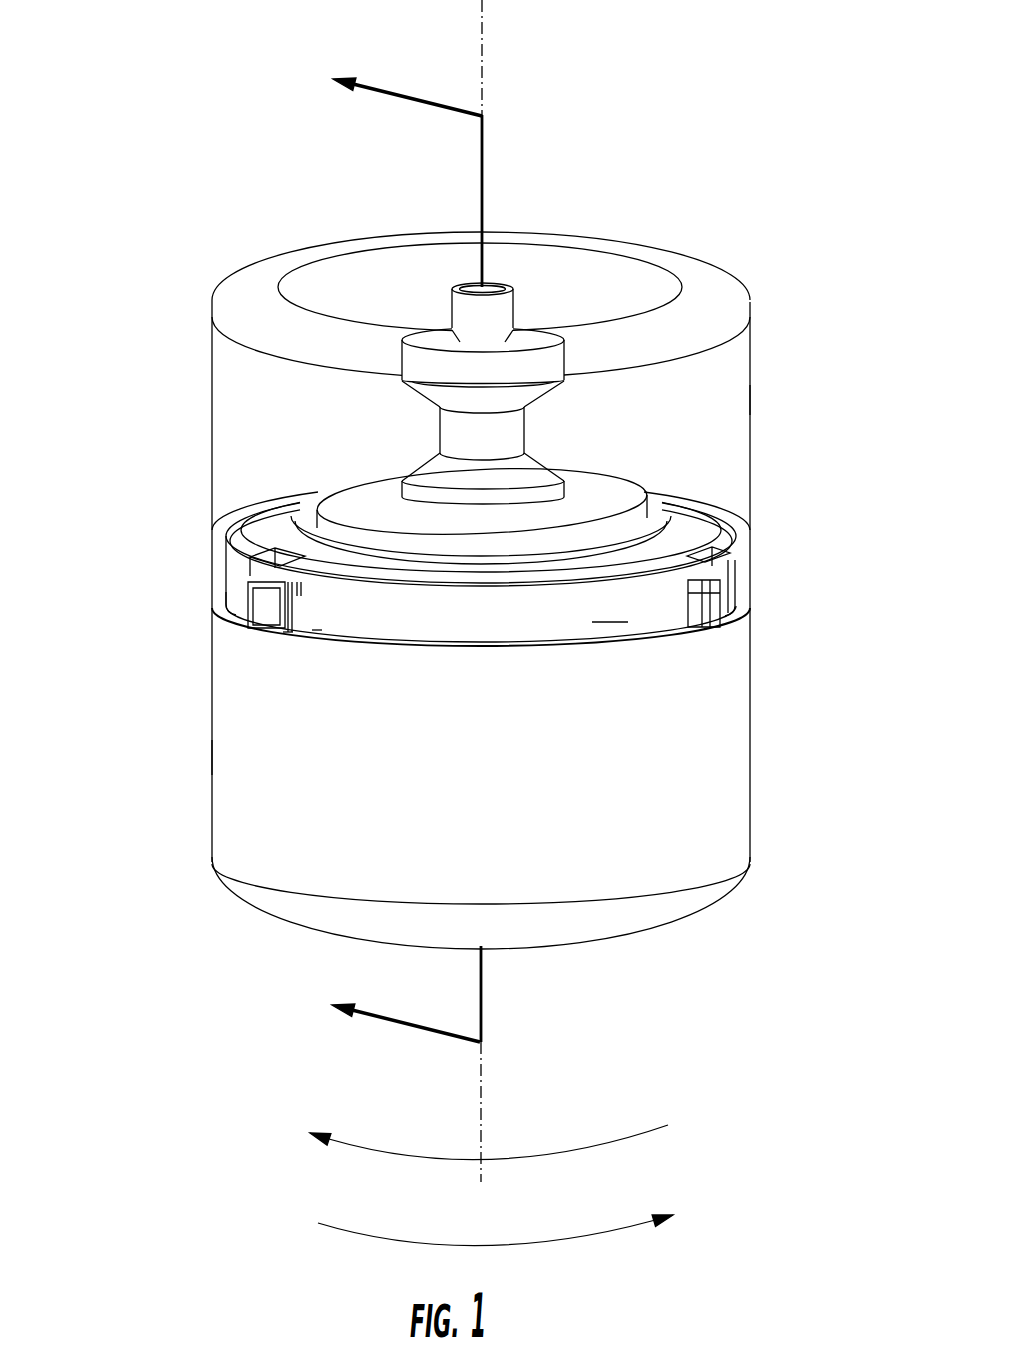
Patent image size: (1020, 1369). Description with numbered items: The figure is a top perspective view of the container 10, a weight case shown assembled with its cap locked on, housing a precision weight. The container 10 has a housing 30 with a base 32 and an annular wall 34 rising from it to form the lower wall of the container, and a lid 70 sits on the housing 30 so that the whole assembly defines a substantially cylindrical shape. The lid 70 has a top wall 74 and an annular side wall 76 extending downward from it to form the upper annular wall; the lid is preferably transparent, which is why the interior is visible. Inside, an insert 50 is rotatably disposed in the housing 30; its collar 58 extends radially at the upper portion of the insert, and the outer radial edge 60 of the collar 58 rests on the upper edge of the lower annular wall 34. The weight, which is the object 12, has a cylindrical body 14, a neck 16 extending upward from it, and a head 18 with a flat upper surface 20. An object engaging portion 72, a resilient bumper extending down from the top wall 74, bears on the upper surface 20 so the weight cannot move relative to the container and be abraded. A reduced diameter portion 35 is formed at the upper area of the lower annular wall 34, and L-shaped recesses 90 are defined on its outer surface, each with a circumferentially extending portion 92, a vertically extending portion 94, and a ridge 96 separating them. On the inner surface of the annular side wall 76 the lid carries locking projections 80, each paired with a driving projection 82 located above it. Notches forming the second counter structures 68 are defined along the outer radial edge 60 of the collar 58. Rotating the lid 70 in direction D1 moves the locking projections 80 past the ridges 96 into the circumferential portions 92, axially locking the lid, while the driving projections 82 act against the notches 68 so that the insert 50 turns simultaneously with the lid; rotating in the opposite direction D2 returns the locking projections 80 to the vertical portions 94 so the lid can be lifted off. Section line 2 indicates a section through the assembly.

The section line / viewing direction 2 is at (407, 538).
The container 10 is at (755, 355).
The object 12 is at (438, 435).
The cylindrical body 14 is at (333, 497).
The neck 16 is at (527, 433).
The head 18 is at (396, 364).
The flat upper surface 20 is at (527, 340).
The housing 30 is at (750, 728).
The base 32 is at (652, 944).
The annular wall 34 is at (212, 757).
The reduced diameter portion 35 is at (610, 612).
The insert 50 is at (715, 530).
The collar 58 is at (738, 538).
The outer radial edge 60 is at (227, 542).
The second counter structure 68 is at (258, 562).
The lid 70 is at (710, 262).
The object engaging portion 72 is at (493, 297).
The top wall 74 is at (358, 277).
The annular side wall 76 is at (750, 400).
The locking projection 80 is at (262, 612).
The driving projection 82 is at (252, 567).
The L-shaped recess 90 is at (265, 615).
The circumferentially extending portion 92 is at (230, 605).
The vertically extending portion 94 is at (288, 632).
The ridge 96 is at (317, 630).
The direction D1 is at (489, 1164).
The direction D2 is at (495, 1246).